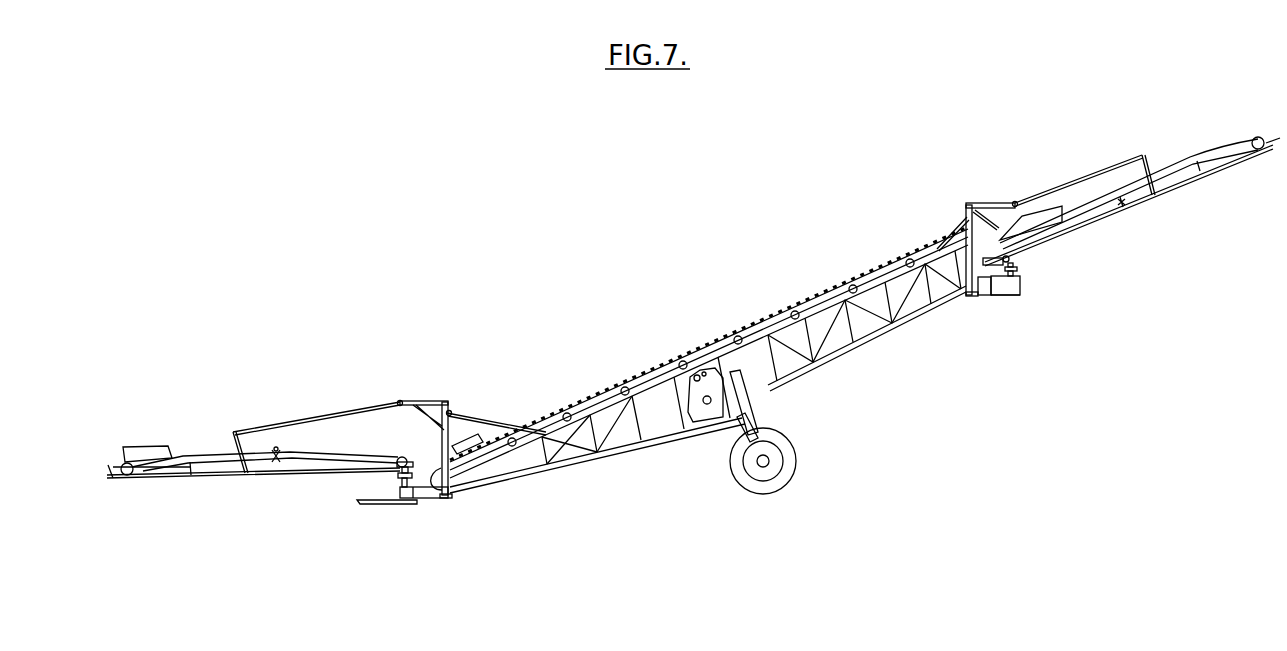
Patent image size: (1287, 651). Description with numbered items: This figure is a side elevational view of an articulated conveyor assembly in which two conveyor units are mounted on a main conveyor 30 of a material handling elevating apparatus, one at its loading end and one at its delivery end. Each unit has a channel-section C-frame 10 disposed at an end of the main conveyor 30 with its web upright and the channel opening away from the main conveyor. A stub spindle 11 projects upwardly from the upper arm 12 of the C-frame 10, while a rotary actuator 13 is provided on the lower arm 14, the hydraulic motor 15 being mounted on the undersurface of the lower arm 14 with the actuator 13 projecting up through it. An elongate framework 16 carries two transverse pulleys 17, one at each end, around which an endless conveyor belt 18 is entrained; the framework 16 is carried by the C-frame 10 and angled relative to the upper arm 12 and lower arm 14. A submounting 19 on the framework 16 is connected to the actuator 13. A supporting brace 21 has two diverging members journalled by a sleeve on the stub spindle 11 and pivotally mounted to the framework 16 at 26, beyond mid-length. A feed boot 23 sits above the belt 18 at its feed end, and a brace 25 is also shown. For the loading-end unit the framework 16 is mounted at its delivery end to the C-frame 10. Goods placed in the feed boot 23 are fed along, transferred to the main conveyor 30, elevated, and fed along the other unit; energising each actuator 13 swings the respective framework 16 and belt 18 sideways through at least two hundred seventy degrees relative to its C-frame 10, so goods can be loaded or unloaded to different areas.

The C-frame 10 is at (453, 489).
The stub spindle 11 is at (401, 401).
The upper arm 12 is at (423, 402).
The rotary actuator 13 is at (398, 485).
The lower arm 14 is at (433, 498).
The hydraulic motor 15 is at (1020, 297).
The elongate framework 16 is at (210, 476).
The pulley 17 is at (113, 474).
The endless conveyor belt 18 is at (180, 452).
The submounting 19 is at (398, 466).
The supporting brace 21 is at (308, 415).
The feed boot 23 is at (153, 450).
The brace 25 is at (478, 408).
The pivotal mounting 26 is at (238, 448).
The main conveyor 30 is at (824, 373).